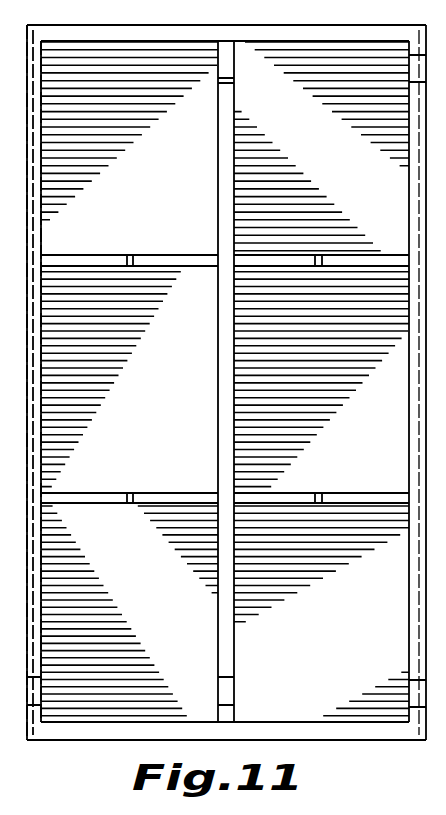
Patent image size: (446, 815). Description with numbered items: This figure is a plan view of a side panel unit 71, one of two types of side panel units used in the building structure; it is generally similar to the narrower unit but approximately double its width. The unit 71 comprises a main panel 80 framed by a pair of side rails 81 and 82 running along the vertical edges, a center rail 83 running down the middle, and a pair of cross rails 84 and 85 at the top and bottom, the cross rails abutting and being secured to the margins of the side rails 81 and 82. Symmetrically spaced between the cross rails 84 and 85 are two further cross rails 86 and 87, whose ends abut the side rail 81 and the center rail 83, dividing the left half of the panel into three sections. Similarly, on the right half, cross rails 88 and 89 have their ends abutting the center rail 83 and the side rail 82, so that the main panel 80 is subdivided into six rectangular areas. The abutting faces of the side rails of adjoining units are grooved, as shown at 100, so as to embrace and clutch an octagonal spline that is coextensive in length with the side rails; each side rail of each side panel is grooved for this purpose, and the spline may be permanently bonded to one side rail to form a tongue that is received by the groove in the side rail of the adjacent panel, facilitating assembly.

The groove 100 is at (40, 33).
The cross rail 84 is at (209, 31).
The side panel unit 71 is at (289, 18).
The side rail 81 is at (38, 244).
The cross rail 86 is at (171, 262).
The cross rail 88 is at (381, 262).
The center rail 83 is at (221, 380).
The main panel 80 is at (163, 409).
The cross rail 87 is at (174, 500).
The cross rail 89 is at (369, 504).
The side rail 82 is at (414, 408).
The cross rail 85 is at (117, 737).